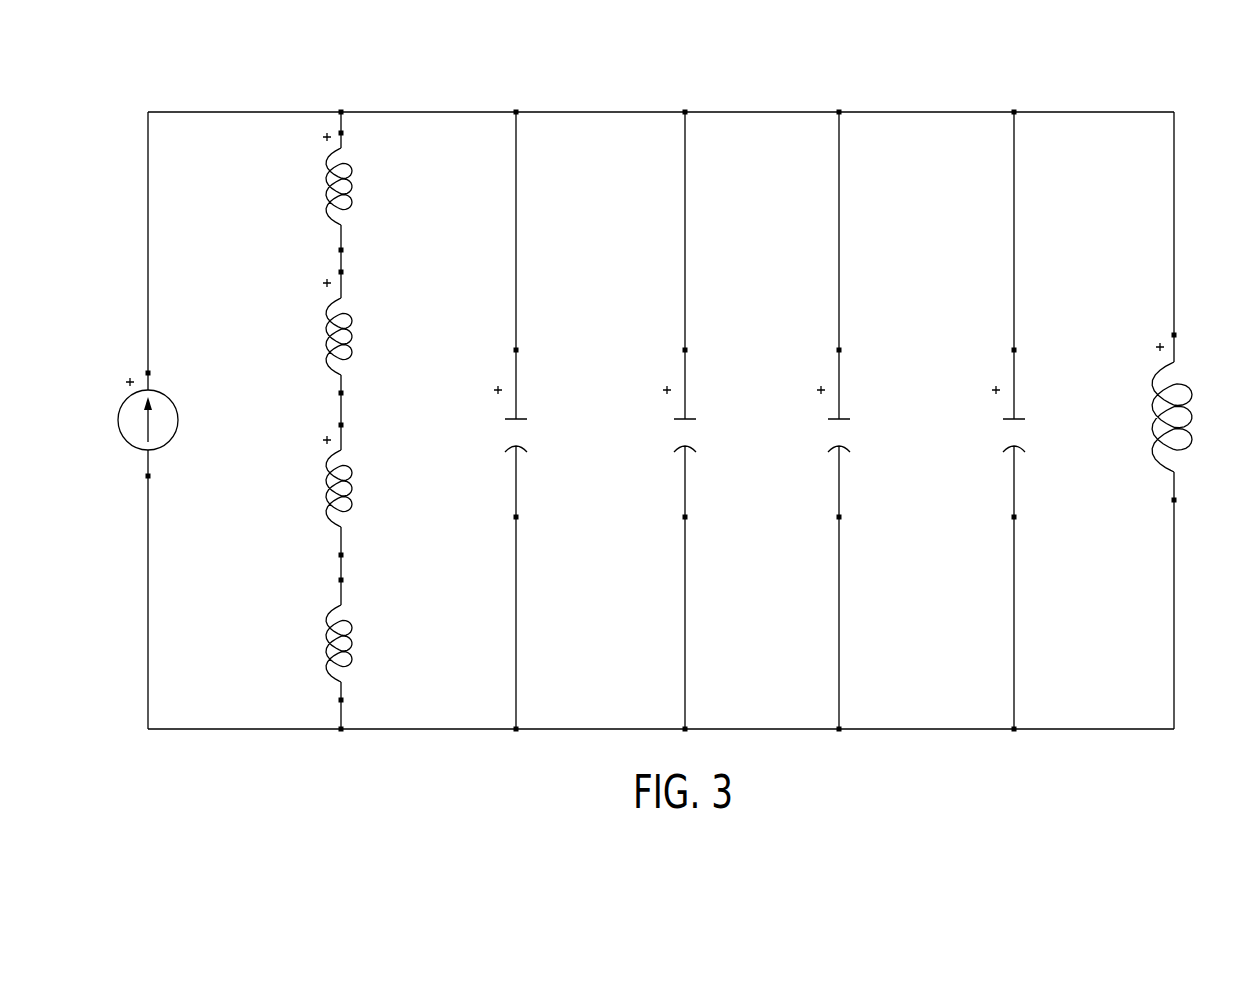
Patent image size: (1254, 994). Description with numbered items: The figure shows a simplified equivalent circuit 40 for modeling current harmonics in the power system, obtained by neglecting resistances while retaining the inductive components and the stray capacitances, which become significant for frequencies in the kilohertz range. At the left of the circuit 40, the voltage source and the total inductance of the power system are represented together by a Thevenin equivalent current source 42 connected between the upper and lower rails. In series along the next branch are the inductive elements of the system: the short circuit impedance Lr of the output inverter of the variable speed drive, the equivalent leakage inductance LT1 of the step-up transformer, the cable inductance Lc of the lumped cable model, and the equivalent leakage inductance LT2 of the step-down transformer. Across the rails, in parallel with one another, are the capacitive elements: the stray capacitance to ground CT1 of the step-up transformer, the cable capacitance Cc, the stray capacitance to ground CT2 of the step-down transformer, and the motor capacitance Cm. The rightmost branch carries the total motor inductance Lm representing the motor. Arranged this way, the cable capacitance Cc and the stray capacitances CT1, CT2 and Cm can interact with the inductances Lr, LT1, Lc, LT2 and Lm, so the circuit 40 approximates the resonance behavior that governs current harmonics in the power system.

The simplified equivalent circuit 40 is at (1070, 97).
The Thevenin equivalent current source 42 is at (118, 406).
The short circuit impedance Lr is at (354, 186).
The equivalent leakage inductance of the step-up transformer LT1 is at (366, 337).
The cable inductance Lc is at (359, 490).
The equivalent leakage inductance of the step-down transformer LT2 is at (368, 650).
The stray capacitance to ground of the step-up transformer CT1 is at (534, 421).
The cable capacitance Cc is at (698, 421).
The stray capacitance to ground of the step-down transformer CT2 is at (857, 421).
The motor capacitance Cm is at (1030, 421).
The total motor inductance Lm is at (1196, 420).